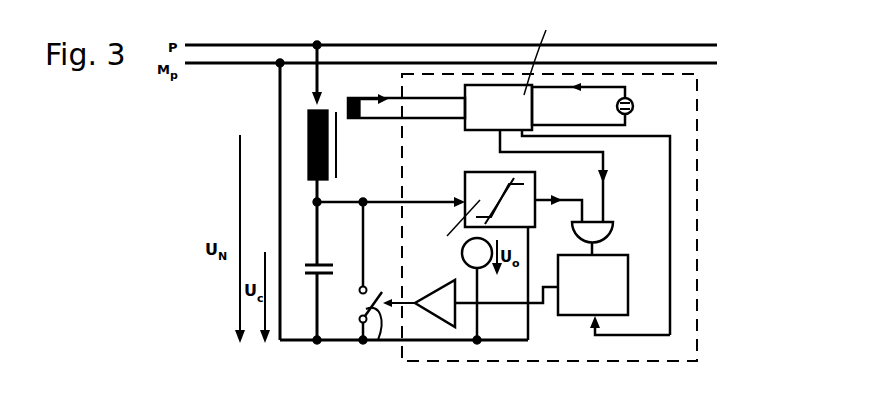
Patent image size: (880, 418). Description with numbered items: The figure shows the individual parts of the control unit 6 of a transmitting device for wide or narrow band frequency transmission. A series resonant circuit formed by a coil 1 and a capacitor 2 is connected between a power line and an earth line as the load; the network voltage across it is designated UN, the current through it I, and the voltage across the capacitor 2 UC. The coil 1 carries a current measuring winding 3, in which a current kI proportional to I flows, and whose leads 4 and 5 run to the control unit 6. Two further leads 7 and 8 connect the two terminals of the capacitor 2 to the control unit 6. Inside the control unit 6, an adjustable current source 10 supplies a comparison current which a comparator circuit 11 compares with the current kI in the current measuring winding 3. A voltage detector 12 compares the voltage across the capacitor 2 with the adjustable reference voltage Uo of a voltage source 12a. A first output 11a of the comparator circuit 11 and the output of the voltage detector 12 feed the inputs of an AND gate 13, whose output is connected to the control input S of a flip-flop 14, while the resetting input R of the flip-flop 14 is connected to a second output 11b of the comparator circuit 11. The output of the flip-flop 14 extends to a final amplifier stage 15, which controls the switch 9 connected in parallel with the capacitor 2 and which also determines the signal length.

The coil 1 is at (308, 125).
The capacitor 2 is at (311, 278).
The current measuring winding 3 is at (372, 99).
The lead 4 is at (378, 95).
The lead 5 is at (387, 119).
The control unit 6 is at (693, 248).
The lead 7 is at (421, 200).
The lead 8 is at (420, 342).
The switch 9 is at (373, 289).
The adjustable current source 10 is at (633, 106).
The comparator circuit 11 is at (512, 93).
The first output of comparator circuit 11a is at (500, 152).
The second output of comparator circuit 11b is at (664, 137).
The voltage detector 12 is at (537, 186).
The voltage source 12a is at (481, 268).
The AND gate 13 is at (621, 237).
The flip-flop 14 is at (628, 305).
The final amplifier stage 15 is at (447, 328).